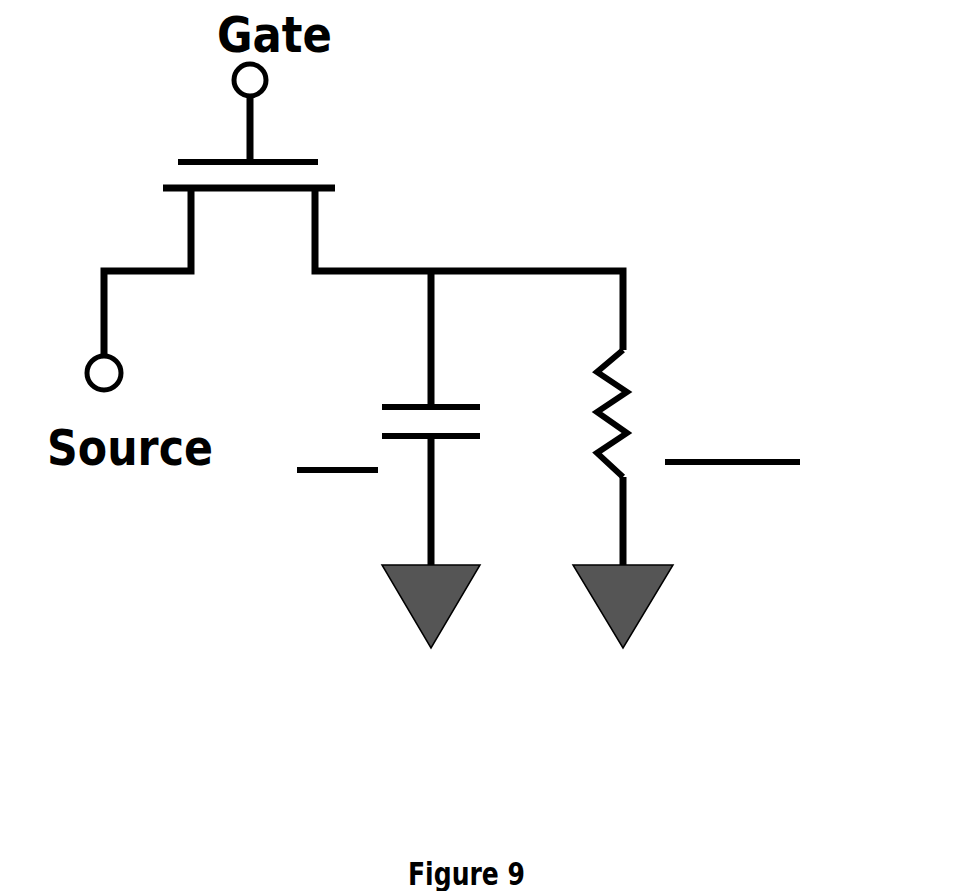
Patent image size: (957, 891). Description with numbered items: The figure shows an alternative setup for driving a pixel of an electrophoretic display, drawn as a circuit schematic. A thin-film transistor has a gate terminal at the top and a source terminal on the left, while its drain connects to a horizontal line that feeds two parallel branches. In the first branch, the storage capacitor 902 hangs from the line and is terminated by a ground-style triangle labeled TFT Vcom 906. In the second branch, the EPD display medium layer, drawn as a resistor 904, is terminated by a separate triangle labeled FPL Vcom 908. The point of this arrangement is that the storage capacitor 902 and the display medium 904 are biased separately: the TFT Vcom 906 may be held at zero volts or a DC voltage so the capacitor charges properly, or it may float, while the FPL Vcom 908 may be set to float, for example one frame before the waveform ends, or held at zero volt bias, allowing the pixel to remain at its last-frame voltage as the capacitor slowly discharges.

The storage capacitor Cst 902 is at (398, 423).
The EPD display medium layer Repd 904 is at (650, 398).
The TFT Vcom 906 is at (390, 633).
The FPL Vcom 908 is at (658, 625).